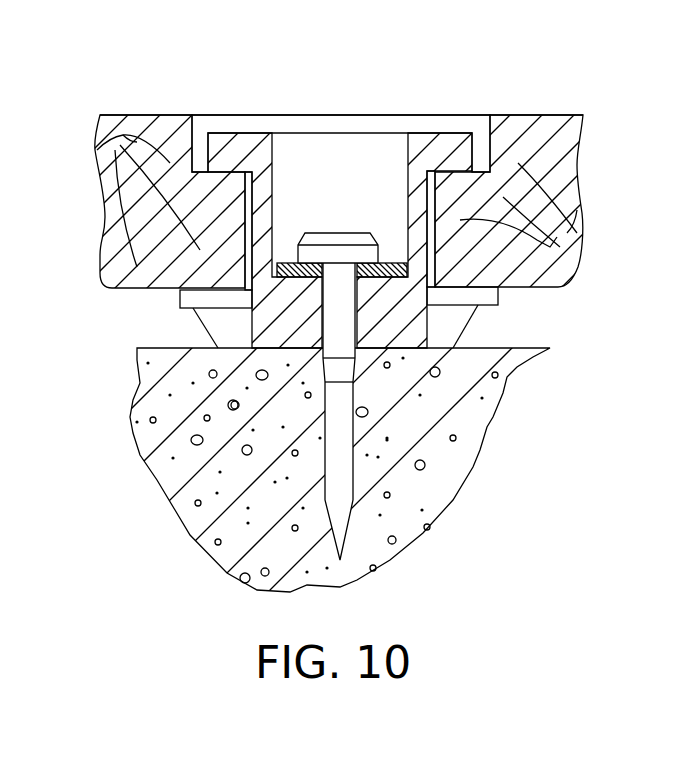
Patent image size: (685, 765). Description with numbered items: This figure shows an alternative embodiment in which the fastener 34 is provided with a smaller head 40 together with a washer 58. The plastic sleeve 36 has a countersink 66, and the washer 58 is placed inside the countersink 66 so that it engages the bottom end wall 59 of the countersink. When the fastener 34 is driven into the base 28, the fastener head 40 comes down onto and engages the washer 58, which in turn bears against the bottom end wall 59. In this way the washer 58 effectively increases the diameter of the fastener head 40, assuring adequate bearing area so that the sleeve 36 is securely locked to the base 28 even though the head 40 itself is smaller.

The countersink 66 is at (407, 178).
The plastic sleeve 36 is at (417, 207).
The washer 58 is at (400, 267).
The bottom end wall 59 is at (290, 258).
The fastener head 40 is at (357, 232).
The fastener 34 is at (340, 423).
The base 28 is at (447, 490).